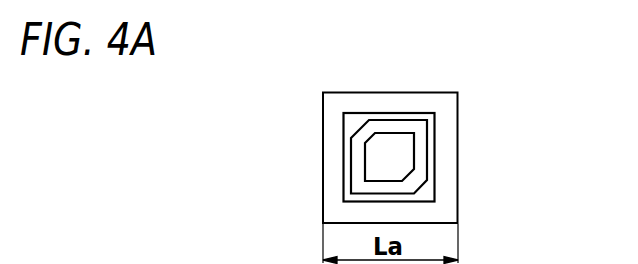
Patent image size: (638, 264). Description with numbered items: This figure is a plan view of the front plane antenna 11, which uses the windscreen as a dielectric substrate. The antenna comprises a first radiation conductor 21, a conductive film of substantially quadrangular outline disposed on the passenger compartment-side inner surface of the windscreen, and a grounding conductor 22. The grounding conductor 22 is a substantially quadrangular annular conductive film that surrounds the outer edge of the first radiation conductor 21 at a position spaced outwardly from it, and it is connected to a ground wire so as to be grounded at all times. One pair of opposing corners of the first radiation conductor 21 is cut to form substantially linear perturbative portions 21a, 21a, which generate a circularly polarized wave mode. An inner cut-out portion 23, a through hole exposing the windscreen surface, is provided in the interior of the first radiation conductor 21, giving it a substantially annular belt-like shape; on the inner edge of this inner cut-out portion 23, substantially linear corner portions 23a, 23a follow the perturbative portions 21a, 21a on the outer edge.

The front plane antenna 11 is at (464, 88).
The grounding conductor 22 is at (335, 102).
The first radiation conductor 21 is at (403, 124).
The perturbative portion 21a is at (359, 130).
The inner cut-out portion 23 is at (380, 181).
The substantially linear corner portion 23a is at (368, 137).